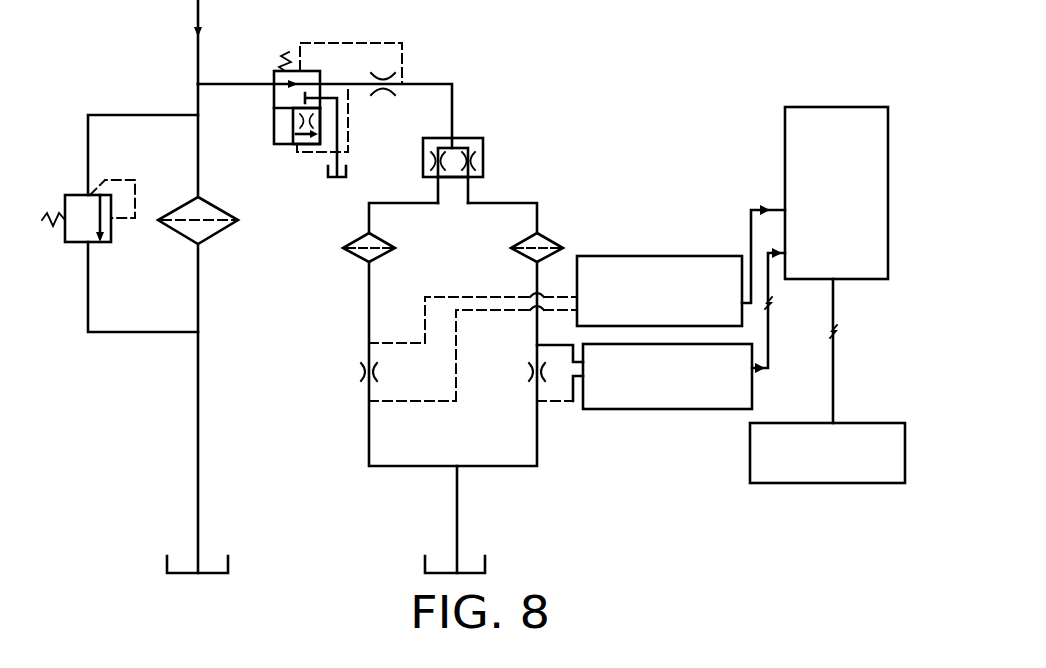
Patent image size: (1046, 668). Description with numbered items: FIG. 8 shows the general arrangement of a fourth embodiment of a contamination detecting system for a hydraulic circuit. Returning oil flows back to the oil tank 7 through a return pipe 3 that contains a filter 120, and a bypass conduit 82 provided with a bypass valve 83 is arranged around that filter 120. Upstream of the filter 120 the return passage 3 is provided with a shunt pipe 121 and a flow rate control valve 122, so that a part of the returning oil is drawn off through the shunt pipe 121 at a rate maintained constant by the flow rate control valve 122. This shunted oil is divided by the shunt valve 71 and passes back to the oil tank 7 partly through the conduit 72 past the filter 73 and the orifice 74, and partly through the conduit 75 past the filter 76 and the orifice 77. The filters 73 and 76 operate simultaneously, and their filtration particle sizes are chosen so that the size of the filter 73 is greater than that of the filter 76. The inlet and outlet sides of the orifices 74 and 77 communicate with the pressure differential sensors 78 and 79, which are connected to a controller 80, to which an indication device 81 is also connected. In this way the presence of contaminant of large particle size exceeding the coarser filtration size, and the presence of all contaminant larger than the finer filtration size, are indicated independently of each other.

The return pipe 3 is at (200, 50).
The oil tank 7 is at (346, 172).
The shunt valve 71 is at (484, 155).
The conduit 72 is at (394, 203).
The filter 73 is at (352, 240).
The orifice 74 is at (360, 371).
The conduit 75 is at (518, 203).
The filter 76 is at (556, 239).
The orifice 77 is at (528, 372).
The pressure differential sensor 78 is at (674, 255).
The pressure differential sensor 79 is at (673, 409).
The controller 80 is at (834, 107).
The indication device 81 is at (864, 423).
The bypass conduit 82 is at (142, 113).
The bypass valve 83 is at (107, 243).
The filter 120 is at (222, 201).
The shunt pipe 121 is at (229, 86).
The flow rate control valve 122 is at (273, 134).